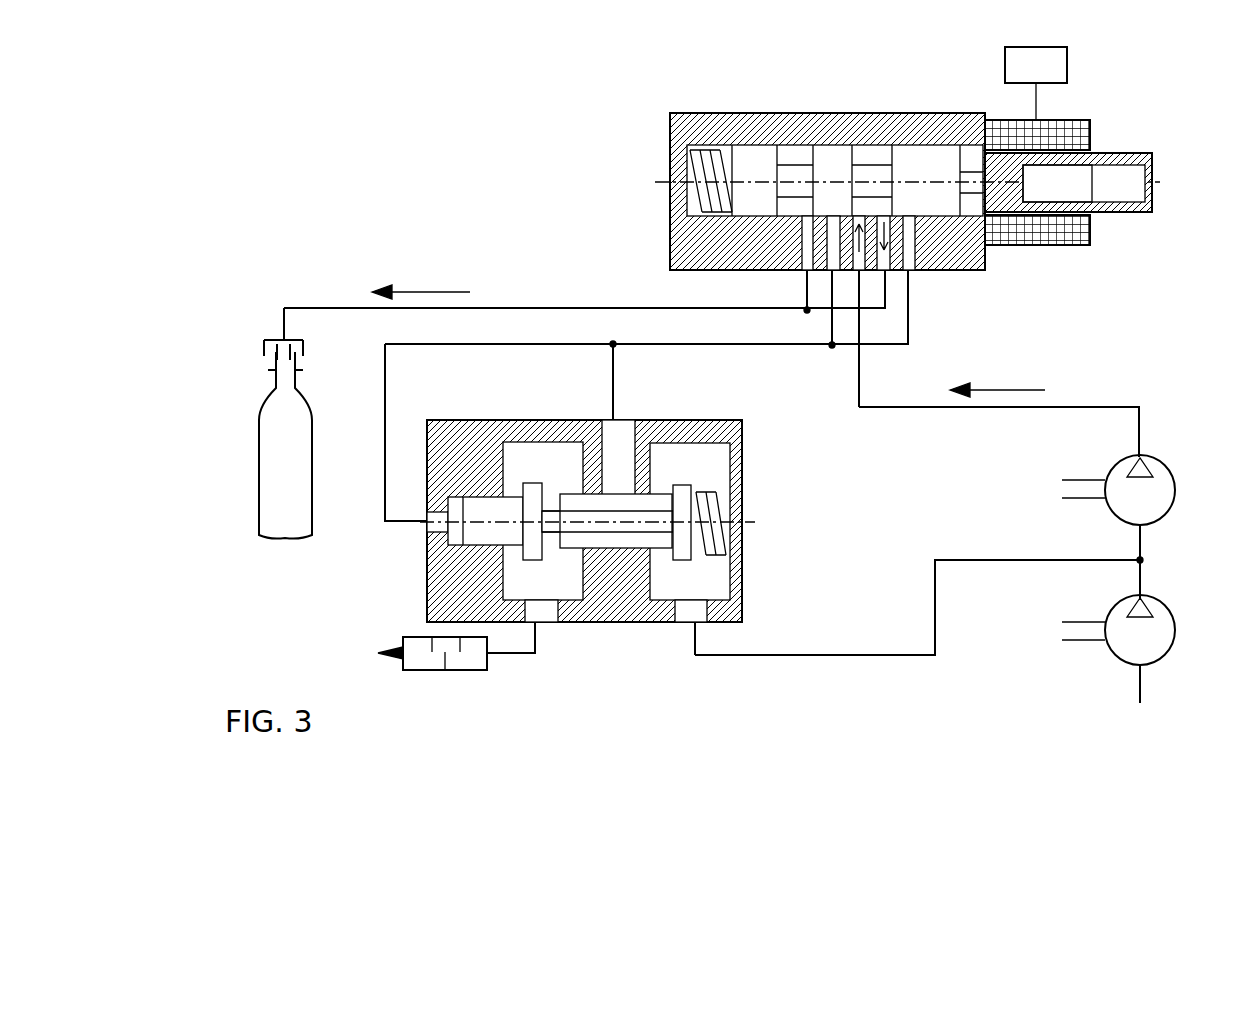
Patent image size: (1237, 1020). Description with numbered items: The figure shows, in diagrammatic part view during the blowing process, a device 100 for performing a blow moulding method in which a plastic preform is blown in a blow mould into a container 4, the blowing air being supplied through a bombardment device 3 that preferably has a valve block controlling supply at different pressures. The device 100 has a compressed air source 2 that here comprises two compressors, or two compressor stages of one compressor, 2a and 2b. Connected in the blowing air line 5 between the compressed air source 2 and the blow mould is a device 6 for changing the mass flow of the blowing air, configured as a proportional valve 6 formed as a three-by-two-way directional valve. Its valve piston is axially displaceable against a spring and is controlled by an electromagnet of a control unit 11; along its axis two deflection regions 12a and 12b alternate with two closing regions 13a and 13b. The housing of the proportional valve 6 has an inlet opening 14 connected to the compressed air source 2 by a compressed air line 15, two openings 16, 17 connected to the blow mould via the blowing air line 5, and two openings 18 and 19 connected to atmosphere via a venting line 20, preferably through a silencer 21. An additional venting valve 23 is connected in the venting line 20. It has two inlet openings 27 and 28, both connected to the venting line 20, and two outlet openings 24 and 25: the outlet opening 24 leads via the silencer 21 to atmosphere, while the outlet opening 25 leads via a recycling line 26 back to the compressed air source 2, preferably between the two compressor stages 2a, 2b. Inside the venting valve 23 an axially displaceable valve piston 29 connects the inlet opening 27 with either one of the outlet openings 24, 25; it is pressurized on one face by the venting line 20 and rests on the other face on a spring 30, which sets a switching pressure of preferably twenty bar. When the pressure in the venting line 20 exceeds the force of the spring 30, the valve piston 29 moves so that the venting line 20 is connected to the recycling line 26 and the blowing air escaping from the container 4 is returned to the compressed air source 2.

The device 100 is at (240, 260).
The compressed air source 2 is at (1143, 569).
The compressor stage 2a is at (1155, 472).
The compressor stage 2b is at (1155, 652).
The bombardment device 3 is at (264, 347).
The container 4 is at (259, 437).
The blowing air line 5 is at (507, 308).
The proportional valve 6 is at (670, 127).
The control unit 11 is at (1067, 76).
The deflection region 12a is at (795, 152).
The deflection region 12b is at (870, 152).
The closing region 13a is at (832, 152).
The closing region 13b is at (927, 152).
The inlet opening 14 is at (866, 272).
The compressed air line 15 is at (902, 410).
The opening 16 is at (908, 318).
The opening 17 is at (810, 272).
The opening 18 is at (912, 272).
The opening 19 is at (827, 290).
The venting line 20 is at (781, 346).
The silencer 21 is at (420, 670).
The venting valve 23 is at (427, 584).
The outlet opening 24 is at (543, 612).
The outlet opening 25 is at (685, 612).
The recycling line 26 is at (797, 655).
The inlet opening 27 is at (625, 432).
The inlet opening 28 is at (427, 528).
The valve piston 29 is at (513, 500).
The spring 30 is at (705, 492).